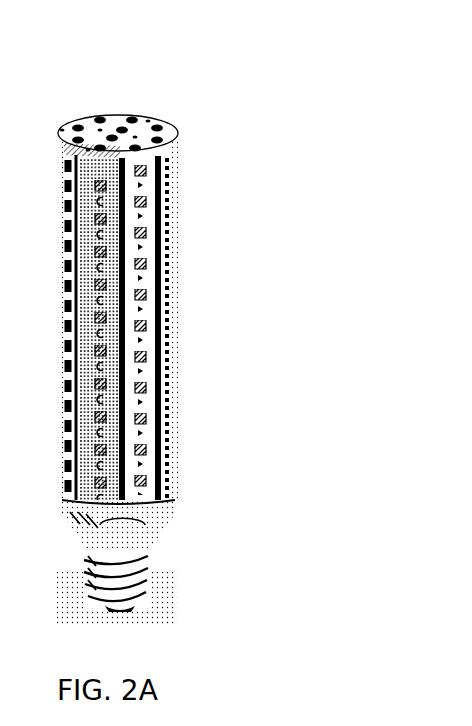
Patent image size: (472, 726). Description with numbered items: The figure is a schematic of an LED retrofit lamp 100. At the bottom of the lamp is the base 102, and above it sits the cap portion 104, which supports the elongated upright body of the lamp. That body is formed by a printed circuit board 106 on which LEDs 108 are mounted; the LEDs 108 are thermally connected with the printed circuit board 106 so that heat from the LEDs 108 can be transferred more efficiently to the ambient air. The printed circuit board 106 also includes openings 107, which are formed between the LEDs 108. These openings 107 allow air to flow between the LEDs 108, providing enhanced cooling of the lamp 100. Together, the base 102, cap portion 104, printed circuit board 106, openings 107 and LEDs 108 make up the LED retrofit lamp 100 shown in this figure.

The LED retrofit lamp 100 is at (95, 72).
The base 102 is at (148, 582).
The cap portion 104 is at (168, 505).
The printed circuit board 106 is at (162, 220).
The openings 107 is at (95, 299).
The LEDs 108 is at (153, 128).